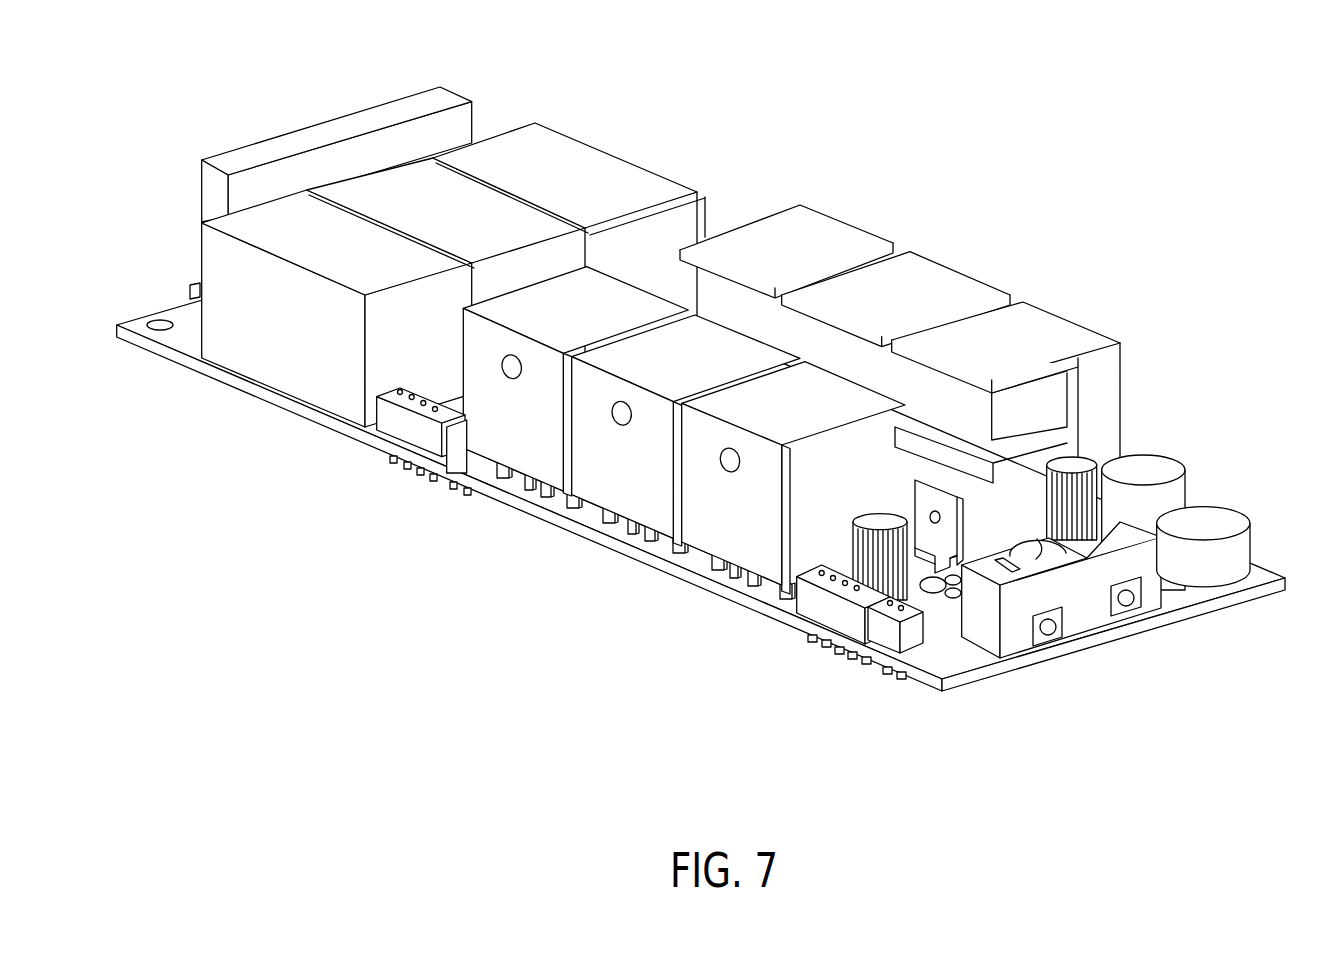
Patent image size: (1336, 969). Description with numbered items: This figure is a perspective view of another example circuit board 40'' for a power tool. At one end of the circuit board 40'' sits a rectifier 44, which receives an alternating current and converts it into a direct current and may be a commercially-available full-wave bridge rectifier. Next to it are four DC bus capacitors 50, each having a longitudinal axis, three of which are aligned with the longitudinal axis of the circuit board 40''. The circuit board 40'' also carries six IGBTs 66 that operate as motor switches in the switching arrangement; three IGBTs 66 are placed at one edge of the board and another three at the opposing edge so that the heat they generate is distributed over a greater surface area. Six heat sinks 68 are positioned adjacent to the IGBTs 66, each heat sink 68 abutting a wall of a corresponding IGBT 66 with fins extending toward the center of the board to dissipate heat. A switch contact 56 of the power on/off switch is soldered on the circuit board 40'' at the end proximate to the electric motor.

The circuit board 40'' is at (701, 458).
The rectifier 44 is at (340, 110).
The DC bus capacitors 50 is at (277, 327).
The switch contact 56 is at (1050, 593).
The IGBTs 66 is at (538, 420).
The heat sinks 68 is at (562, 300).